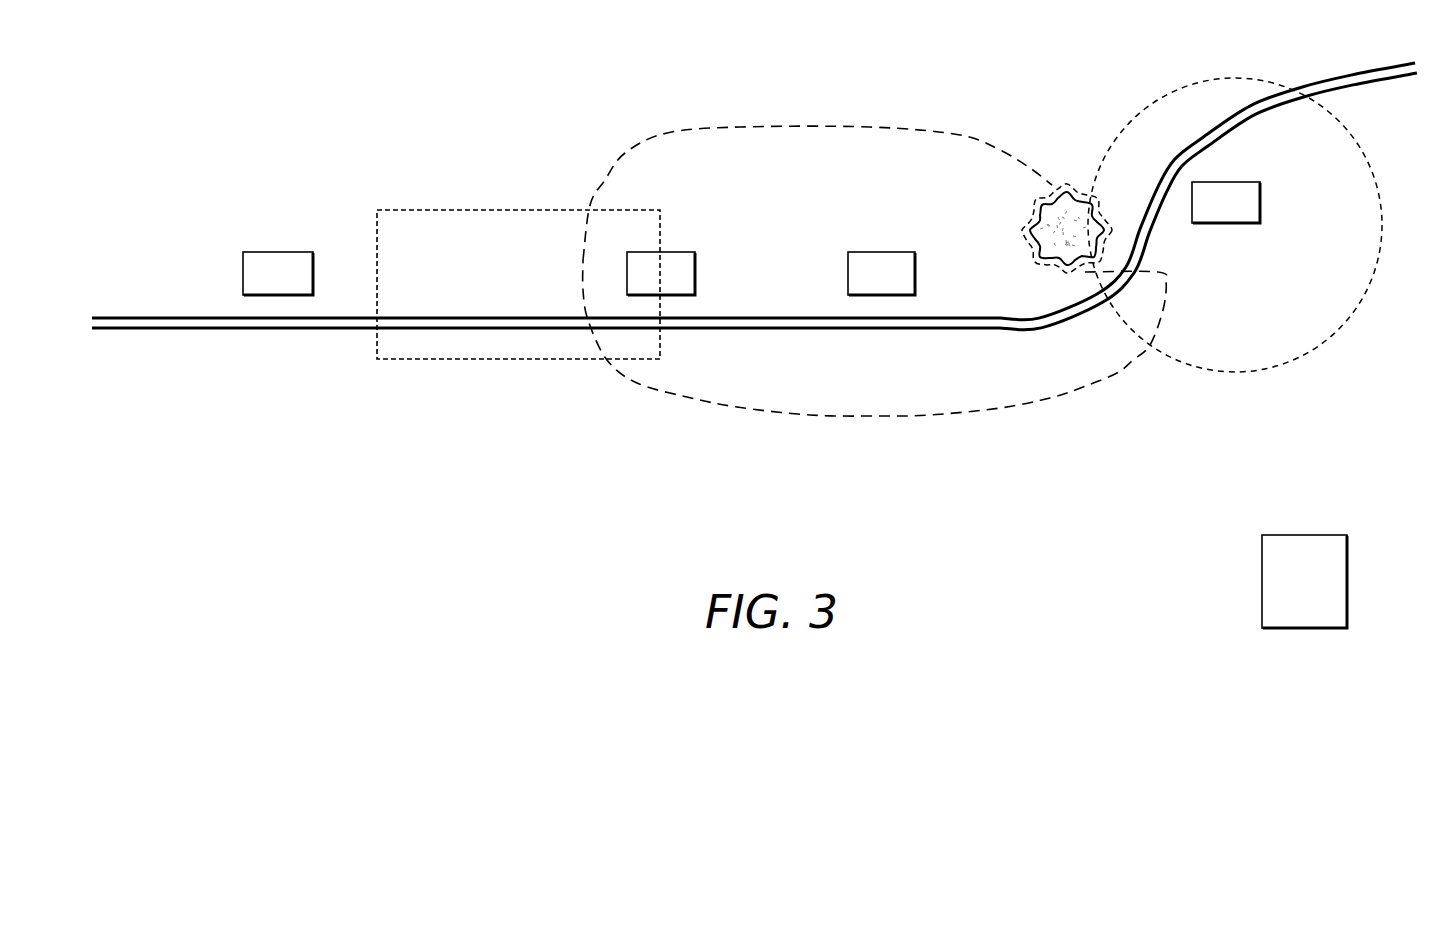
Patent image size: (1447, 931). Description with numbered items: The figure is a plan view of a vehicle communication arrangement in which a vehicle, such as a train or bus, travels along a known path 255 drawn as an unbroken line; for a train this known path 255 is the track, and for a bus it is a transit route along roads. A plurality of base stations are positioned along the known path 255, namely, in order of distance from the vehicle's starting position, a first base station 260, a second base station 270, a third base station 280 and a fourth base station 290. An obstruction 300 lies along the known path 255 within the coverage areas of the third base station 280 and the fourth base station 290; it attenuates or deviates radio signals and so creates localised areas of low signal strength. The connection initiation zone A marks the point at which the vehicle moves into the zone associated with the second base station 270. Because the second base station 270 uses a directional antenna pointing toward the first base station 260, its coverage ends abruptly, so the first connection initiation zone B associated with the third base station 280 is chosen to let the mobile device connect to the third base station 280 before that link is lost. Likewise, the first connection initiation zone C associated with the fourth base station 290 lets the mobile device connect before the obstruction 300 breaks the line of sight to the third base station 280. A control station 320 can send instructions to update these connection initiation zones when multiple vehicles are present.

The known path 255 is at (140, 330).
The first base station 260 is at (299, 287).
The second base station 270 is at (682, 287).
The third base station 280 is at (902, 287).
The fourth base station 290 is at (1247, 216).
The obstruction 300 is at (1067, 186).
The control station 320 is at (1325, 593).
The connection initiation zone A is at (512, 366).
The first connection initiation zone B is at (884, 419).
The first connection initiation zone C is at (1235, 377).